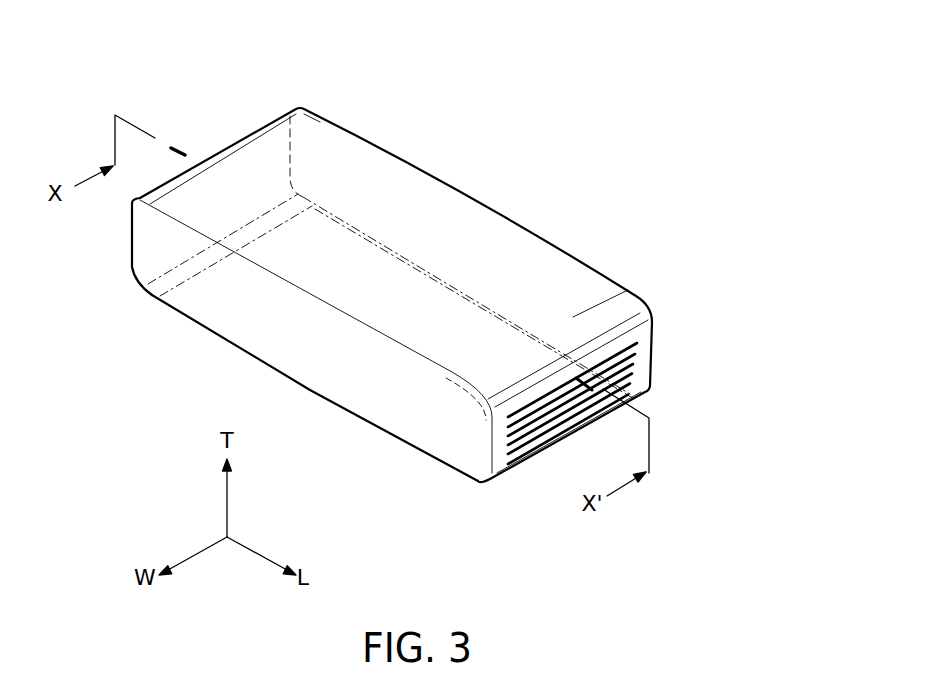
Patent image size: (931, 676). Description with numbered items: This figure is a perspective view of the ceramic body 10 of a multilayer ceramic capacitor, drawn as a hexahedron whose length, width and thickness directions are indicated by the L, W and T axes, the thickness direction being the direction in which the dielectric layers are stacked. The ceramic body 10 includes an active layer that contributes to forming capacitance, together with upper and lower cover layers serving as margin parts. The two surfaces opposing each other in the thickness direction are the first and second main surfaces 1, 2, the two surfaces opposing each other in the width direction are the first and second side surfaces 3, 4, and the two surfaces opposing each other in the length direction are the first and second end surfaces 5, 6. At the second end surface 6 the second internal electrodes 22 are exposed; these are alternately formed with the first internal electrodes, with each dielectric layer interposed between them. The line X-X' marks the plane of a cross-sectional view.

The ceramic body 10 is at (358, 40).
The first main surface 1 is at (396, 239).
The second main surface 2 is at (360, 362).
The first side surface 3 is at (297, 323).
The second side surface 4 is at (498, 260).
The first end surface 5 is at (269, 179).
The second end surface 6 is at (628, 388).
The second internal electrode 22 is at (632, 365).